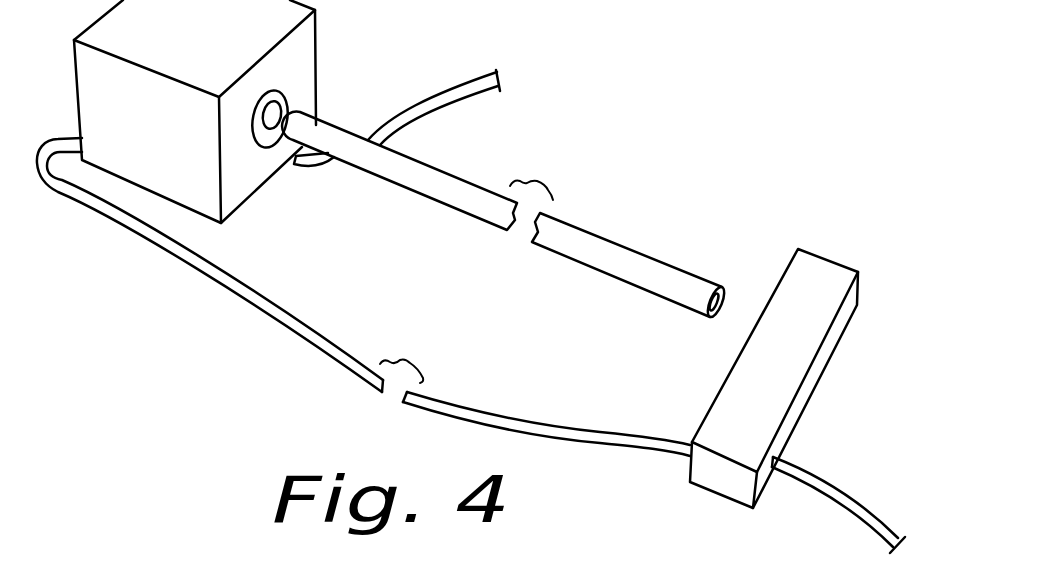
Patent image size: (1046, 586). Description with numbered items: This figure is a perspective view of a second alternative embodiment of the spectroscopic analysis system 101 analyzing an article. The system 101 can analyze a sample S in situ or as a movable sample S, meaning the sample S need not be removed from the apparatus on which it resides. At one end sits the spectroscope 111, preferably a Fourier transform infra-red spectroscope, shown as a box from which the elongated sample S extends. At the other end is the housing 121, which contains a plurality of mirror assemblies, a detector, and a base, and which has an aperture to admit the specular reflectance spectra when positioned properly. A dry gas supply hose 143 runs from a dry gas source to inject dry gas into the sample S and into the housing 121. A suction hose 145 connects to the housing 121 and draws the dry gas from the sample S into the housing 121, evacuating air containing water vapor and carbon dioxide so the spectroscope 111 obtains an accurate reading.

The spectroscopic analysis system 101 is at (567, 114).
The spectroscope 111 is at (302, 52).
The dry gas supply hose 143 is at (468, 78).
The sample S is at (647, 265).
The housing 121 is at (807, 277).
The suction hose 145 is at (860, 502).